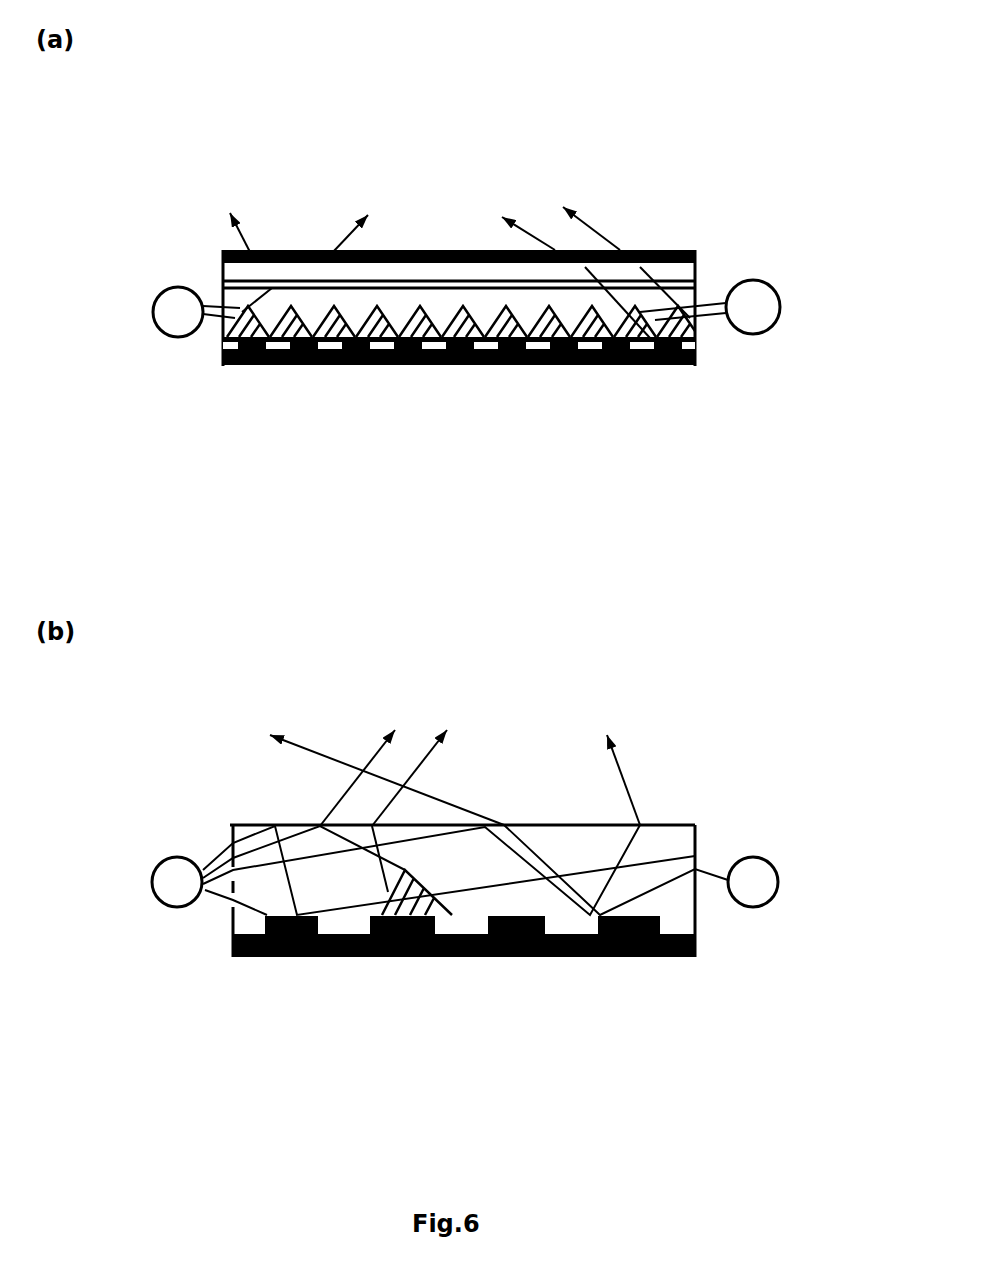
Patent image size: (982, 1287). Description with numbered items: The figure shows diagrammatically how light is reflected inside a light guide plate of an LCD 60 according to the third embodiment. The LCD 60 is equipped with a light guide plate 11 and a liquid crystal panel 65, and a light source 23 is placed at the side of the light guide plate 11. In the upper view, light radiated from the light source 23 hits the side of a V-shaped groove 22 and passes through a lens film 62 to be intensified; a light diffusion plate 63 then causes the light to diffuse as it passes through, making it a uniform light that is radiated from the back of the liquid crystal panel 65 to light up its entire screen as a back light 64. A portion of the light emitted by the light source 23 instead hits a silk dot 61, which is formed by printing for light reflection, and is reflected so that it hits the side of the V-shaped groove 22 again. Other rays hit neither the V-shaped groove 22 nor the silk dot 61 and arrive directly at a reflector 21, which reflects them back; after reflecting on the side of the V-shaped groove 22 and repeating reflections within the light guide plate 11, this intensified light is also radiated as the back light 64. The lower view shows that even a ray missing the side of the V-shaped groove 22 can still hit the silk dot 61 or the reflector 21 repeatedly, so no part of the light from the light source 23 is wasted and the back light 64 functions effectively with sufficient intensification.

The light guide plate 11 is at (521, 590).
The reflector 21 is at (460, 680).
The V-shaped groove 22 is at (463, 612).
The light source 23 is at (466, 639).
The LCD 60 is at (650, 383).
The silk dot 61 is at (436, 677).
The lens film 62 is at (391, 287).
The light diffusion plate 63 is at (395, 224).
The back light 64 is at (492, 478).
The liquid crystal panel 65 is at (500, 222).